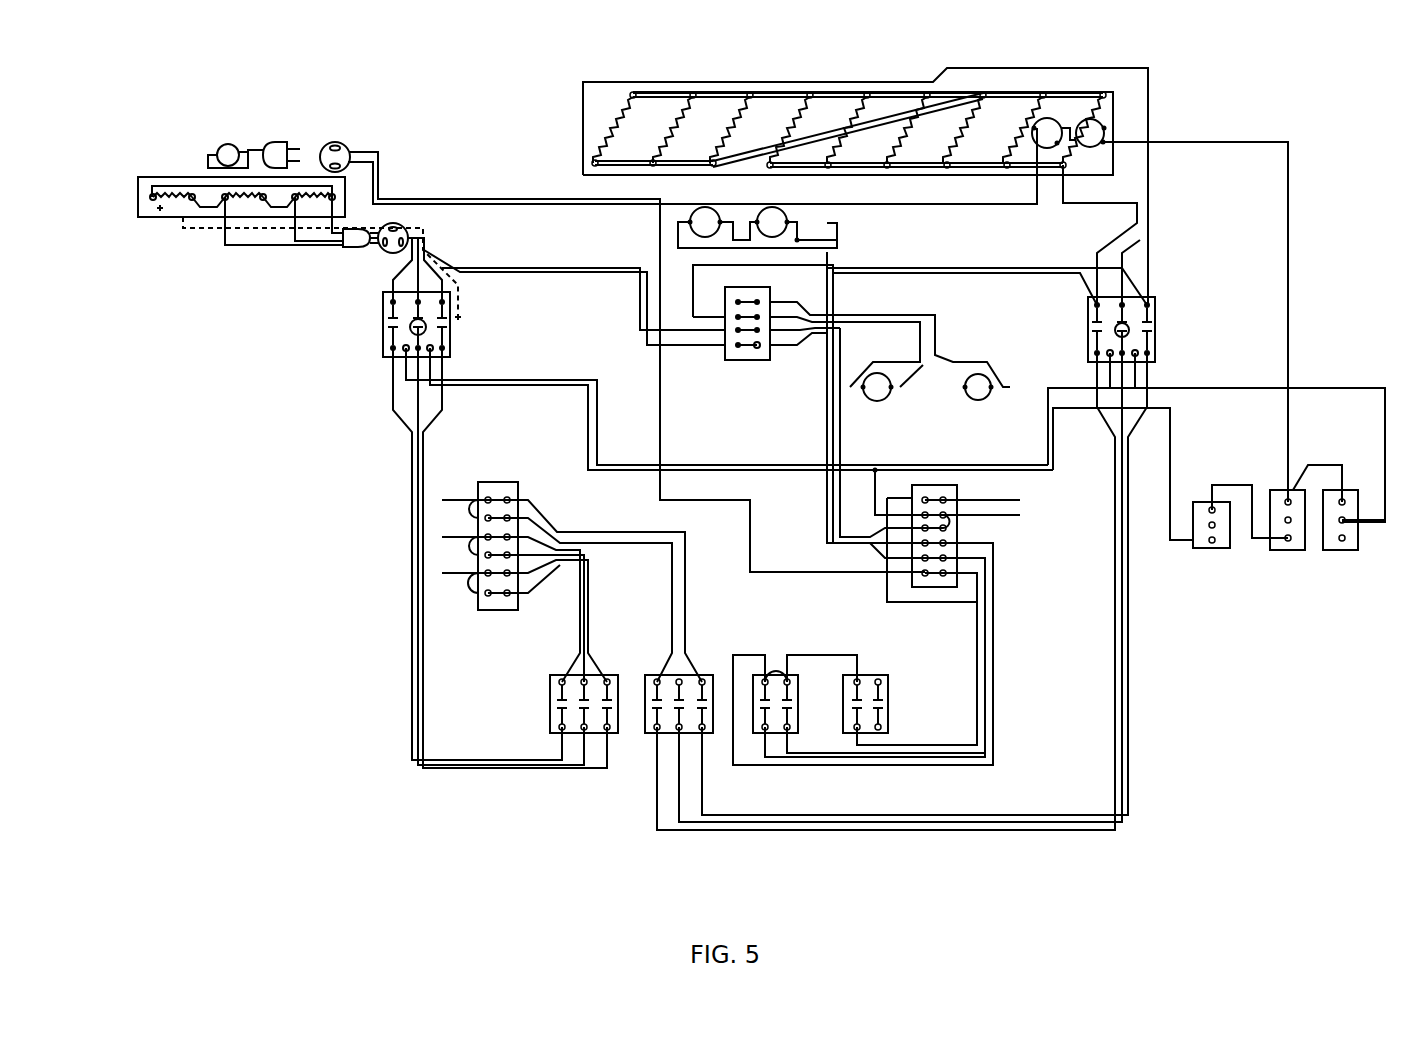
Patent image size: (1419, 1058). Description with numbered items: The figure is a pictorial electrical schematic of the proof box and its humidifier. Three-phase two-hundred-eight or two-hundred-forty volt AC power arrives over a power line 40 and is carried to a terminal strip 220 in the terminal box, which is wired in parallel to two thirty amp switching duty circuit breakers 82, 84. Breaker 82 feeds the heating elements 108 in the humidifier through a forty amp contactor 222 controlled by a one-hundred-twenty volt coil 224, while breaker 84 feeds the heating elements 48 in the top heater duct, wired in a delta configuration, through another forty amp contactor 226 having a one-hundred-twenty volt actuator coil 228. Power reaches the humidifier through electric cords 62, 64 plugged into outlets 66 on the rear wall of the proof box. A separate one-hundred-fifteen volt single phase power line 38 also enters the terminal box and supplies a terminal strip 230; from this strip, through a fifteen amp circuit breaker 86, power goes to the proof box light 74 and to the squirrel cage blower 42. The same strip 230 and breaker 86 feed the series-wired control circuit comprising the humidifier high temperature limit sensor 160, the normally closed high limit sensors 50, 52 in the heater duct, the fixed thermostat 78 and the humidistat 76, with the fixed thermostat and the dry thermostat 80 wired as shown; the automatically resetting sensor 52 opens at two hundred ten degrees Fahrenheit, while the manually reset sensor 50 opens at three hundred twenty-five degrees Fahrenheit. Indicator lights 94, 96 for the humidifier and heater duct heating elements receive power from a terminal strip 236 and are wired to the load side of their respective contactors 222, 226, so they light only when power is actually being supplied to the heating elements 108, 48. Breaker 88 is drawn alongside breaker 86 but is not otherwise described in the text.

The humidifier high temperature limit sensor 160 is at (221, 142).
The electric cord 64 is at (251, 138).
The outlet 66 is at (365, 137).
The heating elements 48 is at (865, 166).
The high temperature limit sensor 50 is at (1058, 142).
The high temperature limit sensor 52 is at (1070, 145).
The squirrel cage blower 42 is at (692, 212).
The light 74 is at (786, 212).
The heating elements 108 is at (315, 200).
The electric cord 62 is at (254, 249).
The contactor 222 is at (420, 324).
The coil 224 is at (426, 327).
The terminal strip 236 is at (748, 360).
The contactor 226 is at (1121, 329).
The actuator coil 228 is at (1130, 328).
The indicator light 94 is at (880, 402).
The indicator light 96 is at (993, 395).
The power line 40 is at (569, 563).
The terminal strip 220 is at (498, 612).
The terminal strip 230 is at (932, 587).
The power line 38 is at (994, 564).
The humidistat 76 is at (1212, 542).
The fixed thermostat 78 is at (1288, 540).
The dry thermostat 80 is at (1342, 540).
The switching duty circuit breaker 82 is at (550, 697).
The switching duty circuit breaker 84 is at (645, 702).
The circuit breaker 86 is at (798, 700).
The relay 88 is at (888, 702).